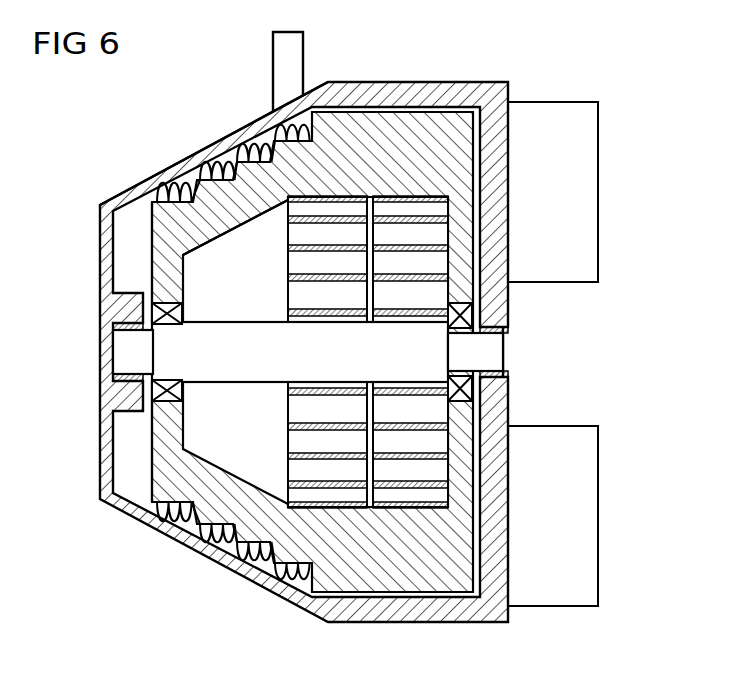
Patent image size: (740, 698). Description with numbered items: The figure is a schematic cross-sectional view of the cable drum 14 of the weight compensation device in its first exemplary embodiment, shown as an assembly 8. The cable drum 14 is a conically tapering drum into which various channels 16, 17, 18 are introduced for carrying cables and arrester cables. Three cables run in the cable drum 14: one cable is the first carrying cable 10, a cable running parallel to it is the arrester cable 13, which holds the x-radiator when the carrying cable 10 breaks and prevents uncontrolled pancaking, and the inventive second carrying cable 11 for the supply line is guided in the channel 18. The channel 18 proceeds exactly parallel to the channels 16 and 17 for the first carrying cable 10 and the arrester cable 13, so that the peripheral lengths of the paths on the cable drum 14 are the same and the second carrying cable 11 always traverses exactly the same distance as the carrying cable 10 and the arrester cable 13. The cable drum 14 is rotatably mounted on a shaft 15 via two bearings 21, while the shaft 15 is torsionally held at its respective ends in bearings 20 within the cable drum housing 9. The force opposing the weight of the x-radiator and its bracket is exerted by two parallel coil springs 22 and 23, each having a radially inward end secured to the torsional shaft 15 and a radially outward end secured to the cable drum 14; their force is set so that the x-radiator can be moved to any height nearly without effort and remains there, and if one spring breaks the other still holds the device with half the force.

The electric machine 8 is at (106, 173).
The cable drum housing 9 is at (449, 93).
The first carrying cable 10 is at (268, 160).
The second carrying cable 11 is at (233, 135).
The arrester cable 13 is at (242, 142).
The cable drum 14 is at (168, 465).
The shaft 15 is at (483, 354).
The channel 16 is at (283, 168).
The channel 17 is at (260, 165).
The channel 18 is at (250, 195).
The bearings 20 is at (502, 374).
The bearings 21 is at (172, 333).
The coil spring 22 is at (288, 287).
The coil spring 23 is at (440, 223).